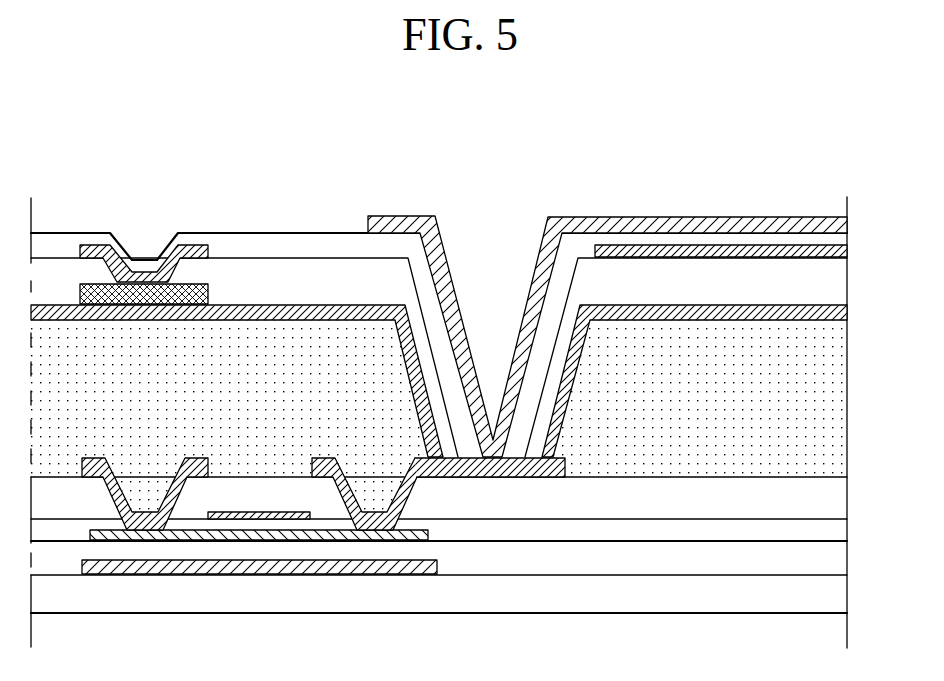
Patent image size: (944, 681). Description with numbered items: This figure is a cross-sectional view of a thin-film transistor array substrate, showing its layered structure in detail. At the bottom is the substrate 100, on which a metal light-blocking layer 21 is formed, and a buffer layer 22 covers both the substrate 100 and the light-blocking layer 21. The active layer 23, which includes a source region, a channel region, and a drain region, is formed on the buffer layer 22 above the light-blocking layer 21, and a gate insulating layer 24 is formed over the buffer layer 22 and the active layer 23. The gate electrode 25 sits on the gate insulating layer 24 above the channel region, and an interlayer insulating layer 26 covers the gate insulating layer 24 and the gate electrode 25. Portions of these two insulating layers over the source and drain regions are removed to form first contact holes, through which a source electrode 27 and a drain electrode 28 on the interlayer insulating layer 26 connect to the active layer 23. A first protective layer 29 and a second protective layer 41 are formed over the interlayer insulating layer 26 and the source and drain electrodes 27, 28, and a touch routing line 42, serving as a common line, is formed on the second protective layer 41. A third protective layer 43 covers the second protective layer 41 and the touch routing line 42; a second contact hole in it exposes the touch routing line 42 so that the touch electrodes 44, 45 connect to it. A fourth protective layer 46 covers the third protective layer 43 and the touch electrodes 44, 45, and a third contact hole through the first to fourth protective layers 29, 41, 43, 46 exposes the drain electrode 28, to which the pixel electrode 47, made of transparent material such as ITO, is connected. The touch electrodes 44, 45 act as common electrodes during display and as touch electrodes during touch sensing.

The substrate 100 is at (838, 598).
The light-blocking layer 21 is at (205, 567).
The buffer layer 22 is at (838, 558).
The active layer 23 is at (335, 536).
The gate insulating layer 24 is at (838, 532).
The gate electrode 25 is at (273, 516).
The interlayer insulating layer 26 is at (838, 502).
The source electrode 27 is at (148, 533).
The drain electrode 28 is at (518, 470).
The first protective layer 29 is at (838, 398).
The second protective layer 41 is at (838, 315).
The touch routing line (common line) 42 is at (192, 292).
The third protective layer 43 is at (838, 286).
The touch electrode (common electrode) 44 is at (92, 250).
The touch electrode (common electrode) 45 is at (845, 250).
The fourth protective layer 46 is at (838, 236).
The pixel electrode 47 is at (838, 222).